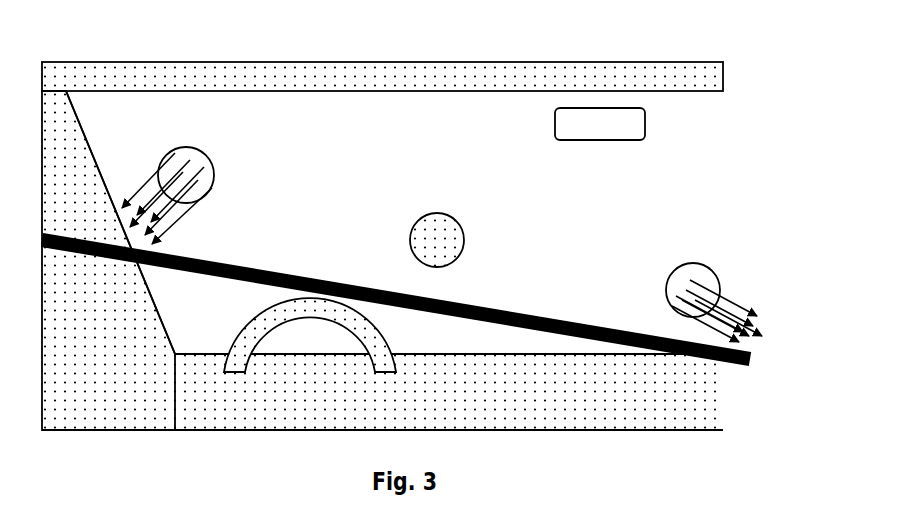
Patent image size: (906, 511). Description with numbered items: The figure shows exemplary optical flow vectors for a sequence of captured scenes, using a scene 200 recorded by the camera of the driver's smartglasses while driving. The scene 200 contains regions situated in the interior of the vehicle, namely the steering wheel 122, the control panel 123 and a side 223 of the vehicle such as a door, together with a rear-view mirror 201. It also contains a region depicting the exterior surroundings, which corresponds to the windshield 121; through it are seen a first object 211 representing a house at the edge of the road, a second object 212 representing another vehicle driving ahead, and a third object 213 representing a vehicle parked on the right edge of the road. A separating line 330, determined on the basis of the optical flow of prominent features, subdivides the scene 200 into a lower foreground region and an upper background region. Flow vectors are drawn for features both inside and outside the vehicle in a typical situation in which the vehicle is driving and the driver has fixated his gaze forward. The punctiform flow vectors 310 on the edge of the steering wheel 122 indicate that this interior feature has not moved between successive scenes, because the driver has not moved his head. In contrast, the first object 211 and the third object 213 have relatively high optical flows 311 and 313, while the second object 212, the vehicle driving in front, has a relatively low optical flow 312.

The scene 200 is at (133, 40).
The windshield 121 is at (307, 122).
The steering wheel 122 is at (246, 323).
The side of the vehicle 223 is at (94, 162).
The control panel 123 is at (720, 403).
The punctiform flow vectors 310 is at (380, 331).
The separating line 330 is at (570, 321).
The first object 211 is at (180, 148).
The optical flow 311 is at (186, 203).
The second object 212 is at (439, 213).
The optical flow 312 is at (449, 240).
The rear-view mirror 201 is at (598, 128).
The third object 213 is at (680, 265).
The optical flow 313 is at (731, 292).